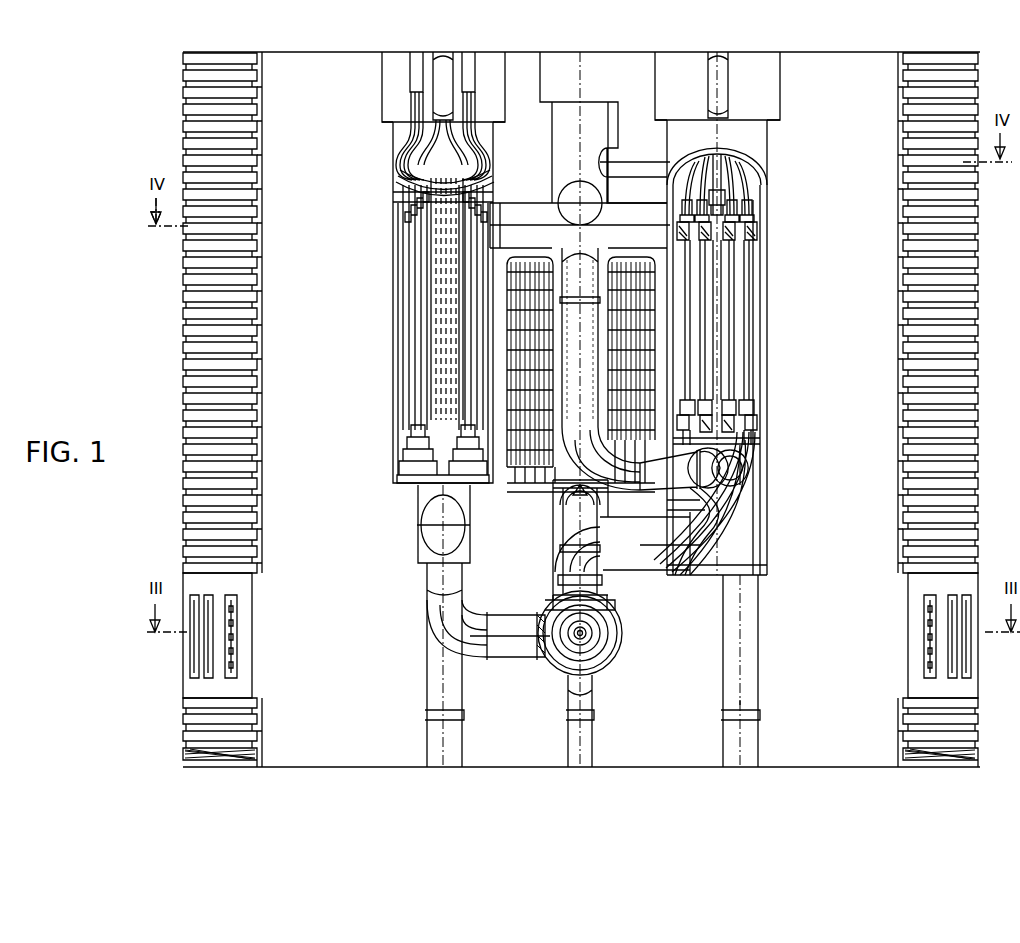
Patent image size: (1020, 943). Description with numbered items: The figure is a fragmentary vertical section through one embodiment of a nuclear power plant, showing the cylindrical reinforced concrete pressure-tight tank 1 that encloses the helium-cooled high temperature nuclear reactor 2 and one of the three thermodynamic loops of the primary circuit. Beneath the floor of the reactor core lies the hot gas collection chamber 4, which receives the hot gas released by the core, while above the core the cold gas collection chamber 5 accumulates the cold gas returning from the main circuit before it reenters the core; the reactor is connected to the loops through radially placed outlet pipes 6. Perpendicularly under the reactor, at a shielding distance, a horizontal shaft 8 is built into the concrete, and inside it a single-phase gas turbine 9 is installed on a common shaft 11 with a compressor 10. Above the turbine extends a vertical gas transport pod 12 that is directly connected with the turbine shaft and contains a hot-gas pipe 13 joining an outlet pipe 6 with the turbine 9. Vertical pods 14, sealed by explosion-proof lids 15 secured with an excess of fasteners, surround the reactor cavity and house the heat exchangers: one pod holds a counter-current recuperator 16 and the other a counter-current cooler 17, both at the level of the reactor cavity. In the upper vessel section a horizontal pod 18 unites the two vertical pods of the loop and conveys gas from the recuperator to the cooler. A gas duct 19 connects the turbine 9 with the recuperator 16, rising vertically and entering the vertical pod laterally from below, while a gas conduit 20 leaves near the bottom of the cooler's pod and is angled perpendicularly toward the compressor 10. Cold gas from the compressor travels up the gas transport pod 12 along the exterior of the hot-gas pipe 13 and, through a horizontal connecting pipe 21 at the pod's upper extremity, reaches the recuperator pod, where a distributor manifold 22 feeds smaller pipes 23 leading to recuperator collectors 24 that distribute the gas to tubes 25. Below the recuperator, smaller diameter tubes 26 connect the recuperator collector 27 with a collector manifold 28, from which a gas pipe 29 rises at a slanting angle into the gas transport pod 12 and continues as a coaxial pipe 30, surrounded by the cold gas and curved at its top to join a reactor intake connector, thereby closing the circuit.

The pressure-tight tank 1 is at (847, 144).
The nuclear reactor 2 is at (640, 288).
The hot gas collection chamber 4 is at (690, 503).
The cold gas collection chamber 5 is at (652, 260).
The outlet pipes 6 is at (578, 494).
The horizontal shafts 8 is at (608, 603).
The gas turbine 9 is at (606, 645).
The compressor 10 is at (553, 653).
The common shaft 11 is at (583, 643).
The gas transport pod 12 is at (600, 340).
The hot-gas pipe 13 is at (570, 534).
The vertical pods 14 is at (403, 135).
The explosion-proof lids 15 is at (388, 76).
The recuperator 16 is at (748, 302).
The cooler 17 is at (408, 288).
The horizontal pods 18 is at (617, 223).
The gas duct 19 is at (637, 556).
The gas conduit 20 is at (507, 648).
The horizontal connecting pipe 21 is at (622, 171).
The distributor manifold 22 is at (757, 155).
The smaller pipes 23 is at (757, 197).
The recuperator collectors 24 is at (760, 211).
The tubes 25 is at (760, 420).
The smaller diameter tubes 26 is at (755, 460).
The recuperator collector 27 is at (758, 429).
The collector manifold 28 is at (718, 472).
The gas pipe 29 is at (653, 468).
The coaxial pipe 30 is at (587, 378).